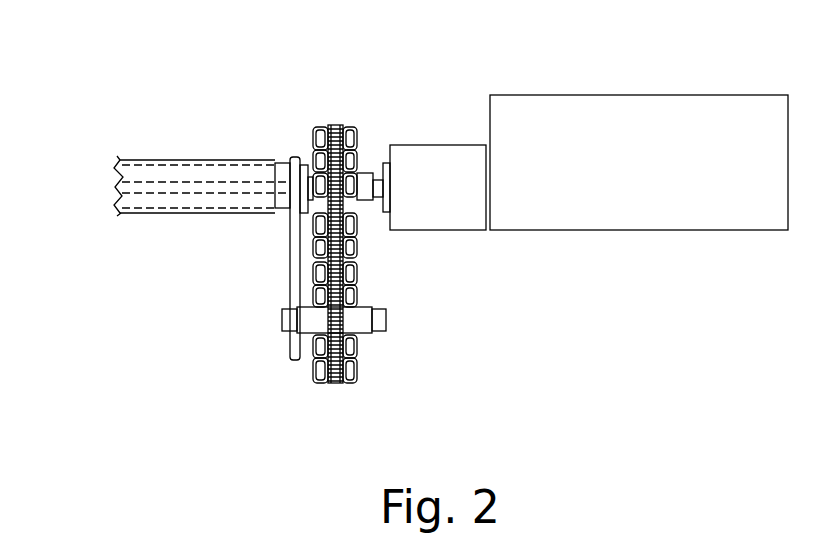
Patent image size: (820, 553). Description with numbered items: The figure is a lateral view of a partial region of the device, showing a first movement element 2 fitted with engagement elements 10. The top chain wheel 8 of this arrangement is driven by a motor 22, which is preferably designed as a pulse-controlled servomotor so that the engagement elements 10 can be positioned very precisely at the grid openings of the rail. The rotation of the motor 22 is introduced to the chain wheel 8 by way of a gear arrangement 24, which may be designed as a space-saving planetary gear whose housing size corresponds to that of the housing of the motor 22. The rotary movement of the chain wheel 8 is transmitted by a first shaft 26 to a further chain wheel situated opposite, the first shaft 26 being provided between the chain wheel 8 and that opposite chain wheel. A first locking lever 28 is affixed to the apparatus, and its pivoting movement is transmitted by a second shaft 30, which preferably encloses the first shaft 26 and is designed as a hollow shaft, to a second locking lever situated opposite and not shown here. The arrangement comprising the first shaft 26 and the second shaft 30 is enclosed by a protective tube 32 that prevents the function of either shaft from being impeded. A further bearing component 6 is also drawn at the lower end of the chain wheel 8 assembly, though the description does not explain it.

The first movement element 2 is at (352, 137).
The lower bearing 6 is at (358, 326).
The top chain wheel 8 is at (362, 186).
The engagement elements 10 is at (312, 137).
The motor 22 is at (640, 118).
The gear arrangement 24 is at (467, 210).
The first shaft 26 is at (118, 190).
The first locking lever 28 is at (290, 282).
The second shaft 30 is at (172, 178).
The protective tube 32 is at (165, 215).